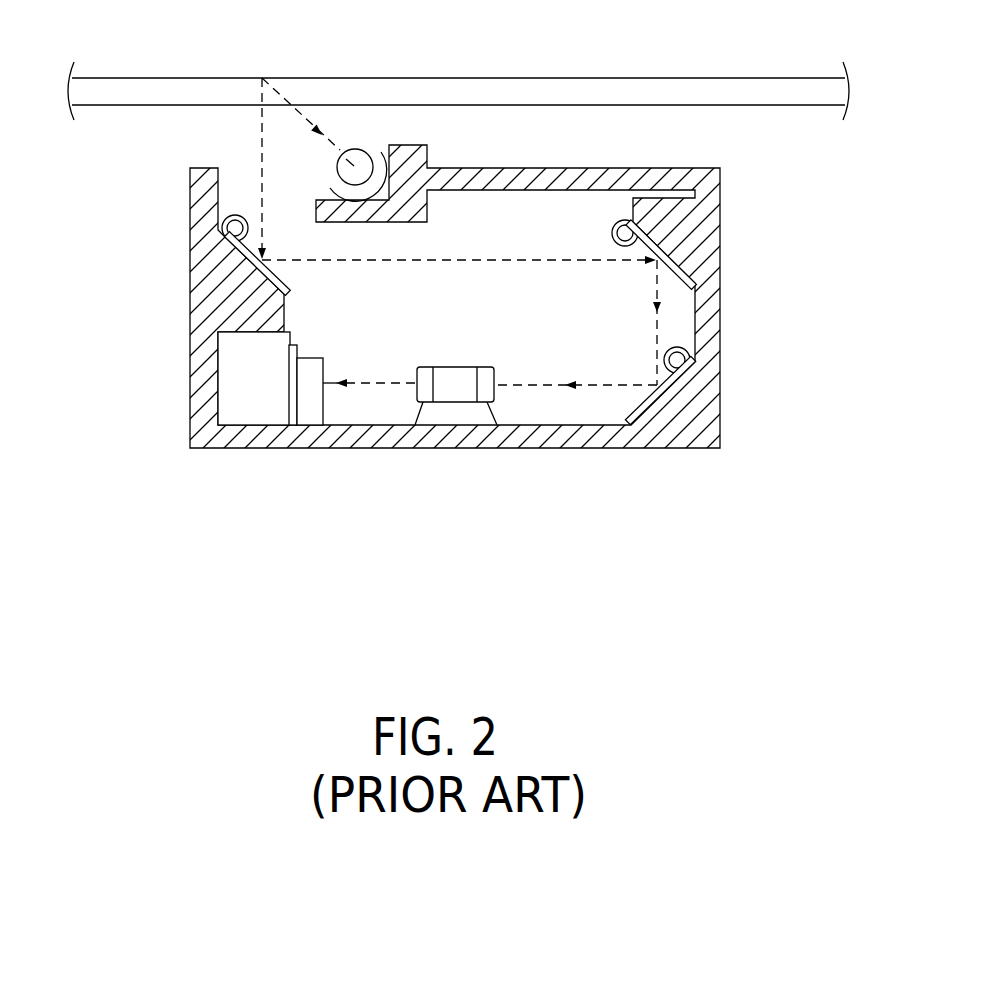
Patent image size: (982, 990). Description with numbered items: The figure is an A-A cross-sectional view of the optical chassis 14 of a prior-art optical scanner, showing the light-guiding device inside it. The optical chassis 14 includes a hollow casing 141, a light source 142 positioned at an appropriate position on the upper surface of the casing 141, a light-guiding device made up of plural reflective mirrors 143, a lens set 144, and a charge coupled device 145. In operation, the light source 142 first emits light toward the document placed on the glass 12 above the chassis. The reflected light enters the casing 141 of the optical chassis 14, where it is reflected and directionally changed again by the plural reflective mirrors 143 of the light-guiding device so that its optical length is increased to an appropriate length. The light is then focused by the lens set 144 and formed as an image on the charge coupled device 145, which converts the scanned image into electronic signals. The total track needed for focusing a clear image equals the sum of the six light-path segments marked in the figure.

The glass 12 is at (497, 88).
The optical chassis 14 is at (152, 345).
The hollow casing 141 is at (200, 408).
The light source 142 is at (358, 149).
The reflective mirrors 143 is at (210, 251).
The lens set 144 is at (448, 392).
The charge coupled device 145 is at (313, 405).